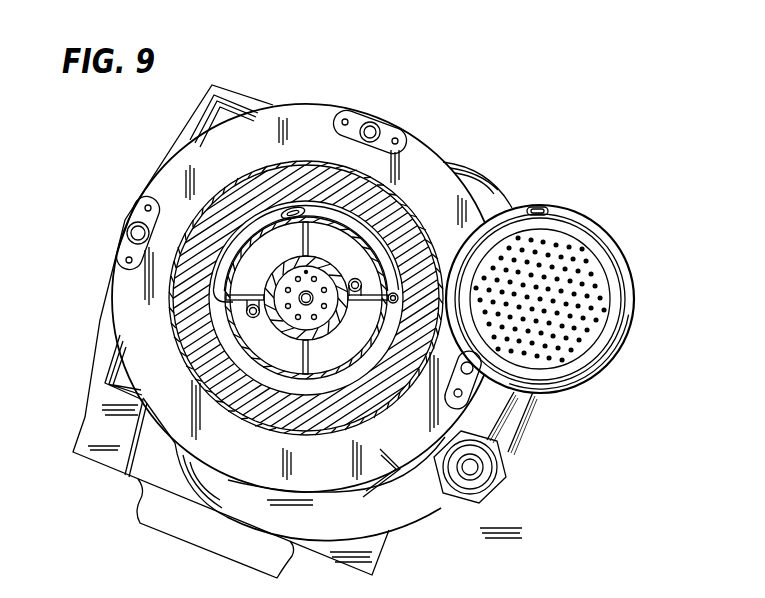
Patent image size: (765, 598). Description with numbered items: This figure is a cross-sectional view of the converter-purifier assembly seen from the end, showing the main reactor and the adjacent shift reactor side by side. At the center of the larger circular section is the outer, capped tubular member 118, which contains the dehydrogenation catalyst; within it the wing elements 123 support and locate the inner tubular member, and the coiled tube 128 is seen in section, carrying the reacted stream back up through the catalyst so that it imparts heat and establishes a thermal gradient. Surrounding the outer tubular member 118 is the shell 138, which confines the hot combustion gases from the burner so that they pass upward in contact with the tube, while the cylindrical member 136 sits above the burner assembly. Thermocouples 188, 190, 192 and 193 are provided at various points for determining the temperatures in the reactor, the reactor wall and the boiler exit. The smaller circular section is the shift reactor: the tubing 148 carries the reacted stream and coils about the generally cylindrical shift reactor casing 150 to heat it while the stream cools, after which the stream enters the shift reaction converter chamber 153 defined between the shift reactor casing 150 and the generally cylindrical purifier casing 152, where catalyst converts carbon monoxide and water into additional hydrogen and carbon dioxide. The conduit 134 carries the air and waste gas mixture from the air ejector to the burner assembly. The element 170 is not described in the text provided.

The outer capped tubular member 118 is at (268, 372).
The wing elements 123 is at (300, 243).
The coiled tube 128 is at (310, 289).
The conduit 134 is at (434, 525).
The cylindrical member 136 is at (328, 420).
The shell 138 is at (404, 402).
The tubing 148 is at (546, 206).
The shift reactor casing 150 is at (597, 368).
The purifier casing 152 is at (604, 340).
The shift reaction converter chamber 153 is at (613, 265).
The perforations 170 is at (583, 268).
The thermocouple 188 is at (250, 316).
The thermocouple 190 is at (357, 284).
The thermocouple 192 is at (394, 293).
The thermocouple 193 is at (222, 296).